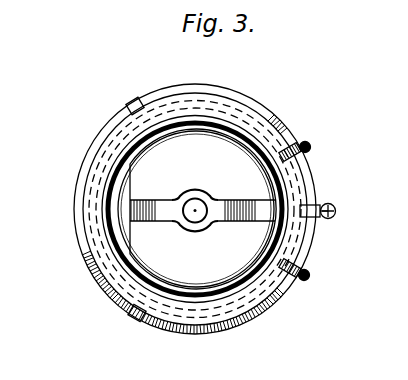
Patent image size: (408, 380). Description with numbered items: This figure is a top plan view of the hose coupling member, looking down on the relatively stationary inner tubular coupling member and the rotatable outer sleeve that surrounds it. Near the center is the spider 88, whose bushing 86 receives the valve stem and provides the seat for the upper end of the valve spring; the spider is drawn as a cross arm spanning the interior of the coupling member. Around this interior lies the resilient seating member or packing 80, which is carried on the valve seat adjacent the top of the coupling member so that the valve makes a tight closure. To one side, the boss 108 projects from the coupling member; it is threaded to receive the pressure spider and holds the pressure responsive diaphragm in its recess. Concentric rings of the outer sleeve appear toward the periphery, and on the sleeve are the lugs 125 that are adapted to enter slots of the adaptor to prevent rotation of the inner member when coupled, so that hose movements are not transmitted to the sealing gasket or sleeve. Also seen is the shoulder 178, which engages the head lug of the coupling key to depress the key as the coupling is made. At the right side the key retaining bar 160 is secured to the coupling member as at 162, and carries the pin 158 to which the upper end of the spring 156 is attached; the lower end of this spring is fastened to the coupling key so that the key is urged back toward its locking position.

The resilient seating member or packing 80 is at (117, 162).
The bushing 86 is at (200, 232).
The spider 88 is at (240, 200).
The boss 108 is at (131, 187).
The lugs 125 is at (138, 318).
The spring 156 is at (327, 206).
The pin 158 is at (337, 211).
The key retaining bar 160 is at (311, 245).
The securing means of key retaining bar 162 is at (308, 277).
The shoulder 178 is at (72, 203).